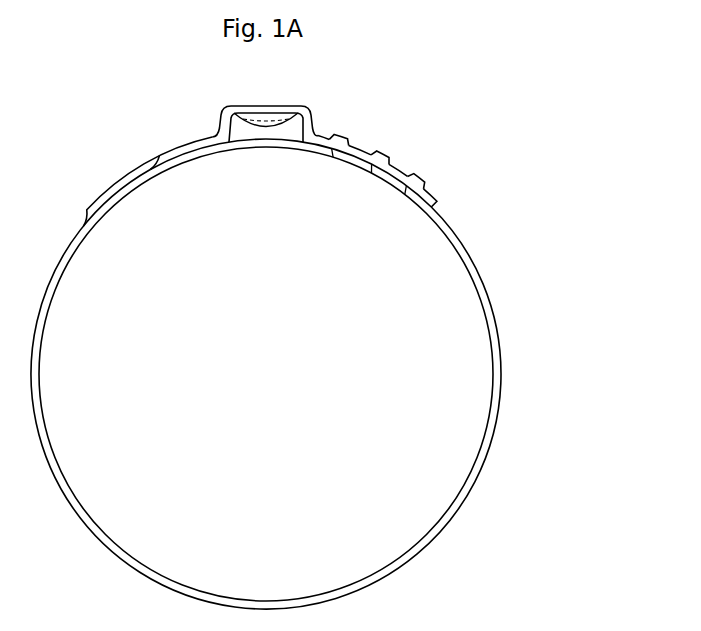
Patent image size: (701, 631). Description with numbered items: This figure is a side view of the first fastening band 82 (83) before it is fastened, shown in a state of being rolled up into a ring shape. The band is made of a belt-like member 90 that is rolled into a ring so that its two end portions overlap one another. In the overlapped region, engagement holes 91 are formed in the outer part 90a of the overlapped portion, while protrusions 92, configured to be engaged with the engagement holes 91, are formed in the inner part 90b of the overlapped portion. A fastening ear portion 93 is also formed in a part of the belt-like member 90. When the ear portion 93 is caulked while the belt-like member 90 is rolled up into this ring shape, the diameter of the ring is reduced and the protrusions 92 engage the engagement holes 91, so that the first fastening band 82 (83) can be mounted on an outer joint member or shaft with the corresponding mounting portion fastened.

The first fastening band 82 is at (509, 260).
The first fastening band 83 is at (335, 343).
The belt-like member 90 is at (477, 506).
The outer part of the overlapped portion 90a is at (398, 157).
The inner part of the overlapped portion 90b is at (243, 145).
The engagement holes 91 is at (333, 152).
The protrusions 92 is at (341, 136).
The fastening ear portion 93 is at (262, 106).